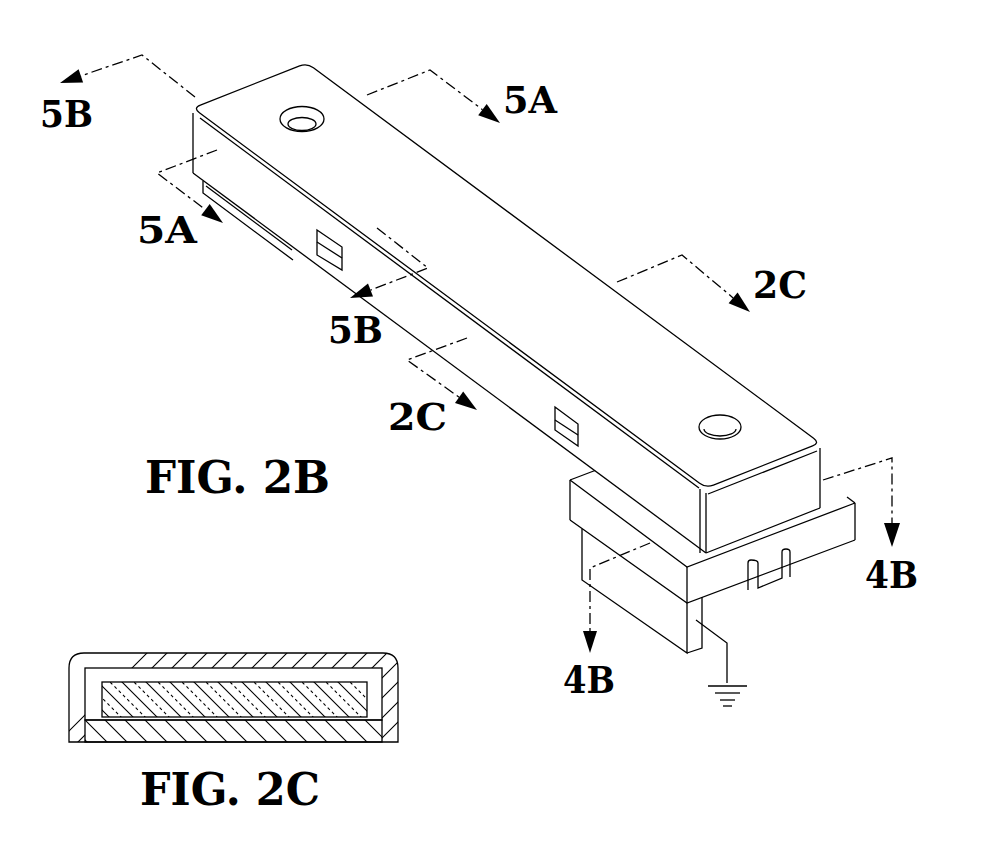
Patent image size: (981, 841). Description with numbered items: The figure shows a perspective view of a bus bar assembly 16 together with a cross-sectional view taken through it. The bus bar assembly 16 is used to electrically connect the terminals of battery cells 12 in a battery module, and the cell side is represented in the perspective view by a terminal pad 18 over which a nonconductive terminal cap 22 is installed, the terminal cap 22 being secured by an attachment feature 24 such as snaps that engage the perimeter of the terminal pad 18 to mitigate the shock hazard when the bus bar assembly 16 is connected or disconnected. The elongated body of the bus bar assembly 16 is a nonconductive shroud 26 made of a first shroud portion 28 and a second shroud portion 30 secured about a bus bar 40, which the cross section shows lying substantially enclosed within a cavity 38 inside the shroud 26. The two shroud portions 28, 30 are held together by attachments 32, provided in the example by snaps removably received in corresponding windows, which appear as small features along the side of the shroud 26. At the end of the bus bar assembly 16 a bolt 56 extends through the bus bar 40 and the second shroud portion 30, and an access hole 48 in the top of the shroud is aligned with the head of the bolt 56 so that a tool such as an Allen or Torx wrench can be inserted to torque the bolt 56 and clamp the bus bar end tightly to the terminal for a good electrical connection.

In FIG. 2B, the battery cell 12 is at (755, 732).
In FIG. 2B, the bus bar assembly 16 is at (552, 160).
In FIG. 2C, the bus bar assembly 16 is at (393, 643).
In FIG. 2B, the terminal pad 18 is at (677, 633).
In FIG. 2B, the terminal cap 22 is at (823, 540).
In FIG. 2B, the attachment feature 24 is at (768, 572).
In FIG. 2B, the shroud 26 is at (545, 235).
In FIG. 2B, the first shroud portion 28 is at (717, 387).
In FIG. 2C, the first shroud portion 28 is at (168, 660).
In FIG. 2C, the second shroud portion 30 is at (352, 733).
In FIG. 2B, the attachment 32 is at (318, 262).
In FIG. 2C, the cavity 38 is at (97, 700).
In FIG. 2C, the bus bar 40 is at (335, 702).
In FIG. 2B, the access hole 48 is at (311, 110).
In FIG. 2B, the bolt 56 is at (287, 112).